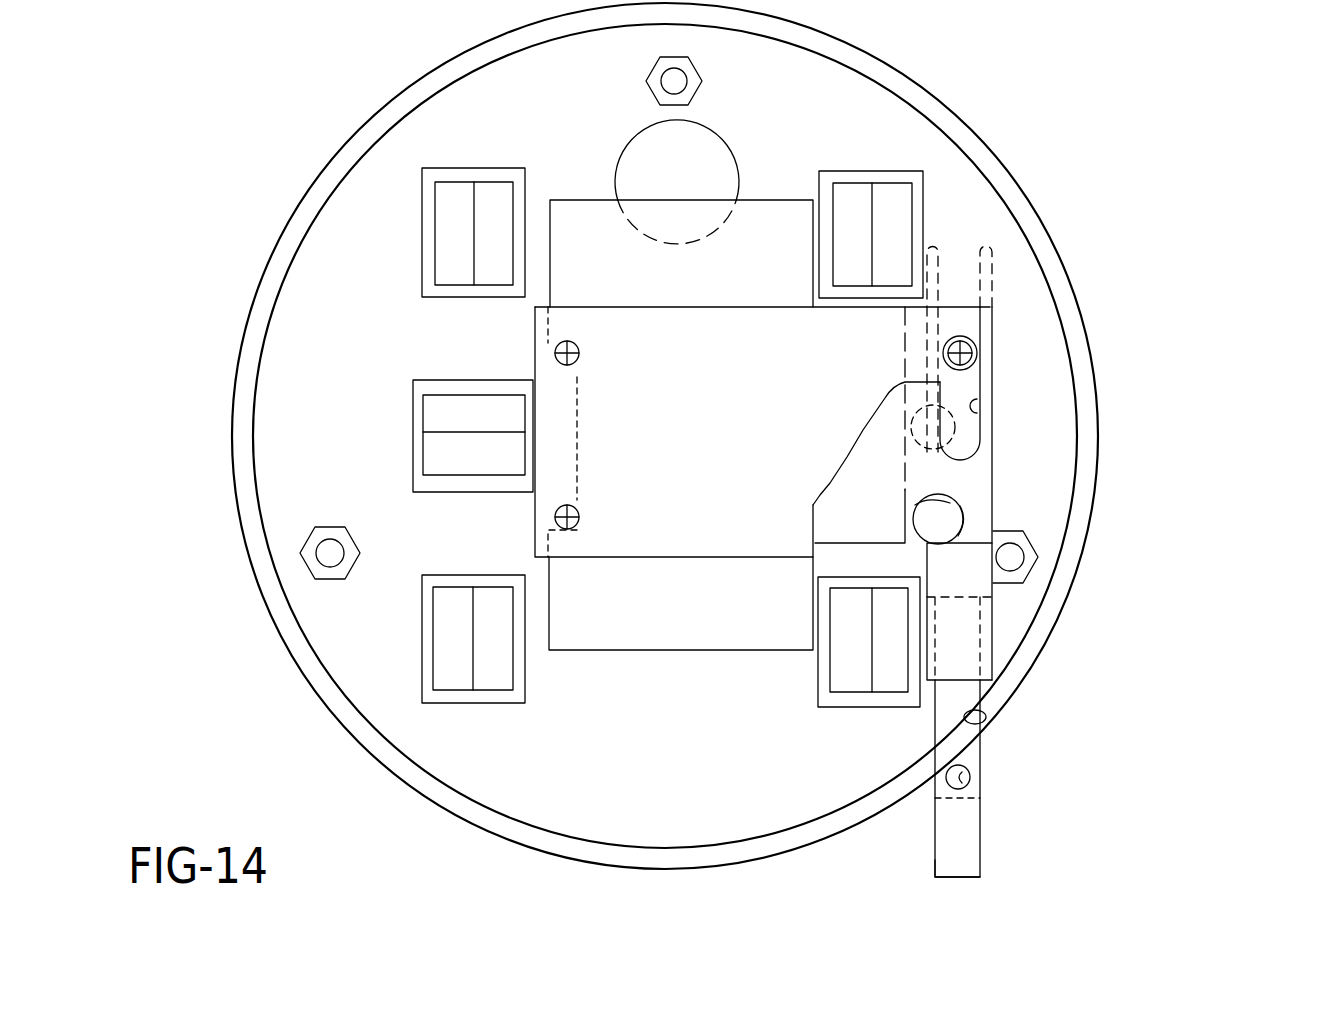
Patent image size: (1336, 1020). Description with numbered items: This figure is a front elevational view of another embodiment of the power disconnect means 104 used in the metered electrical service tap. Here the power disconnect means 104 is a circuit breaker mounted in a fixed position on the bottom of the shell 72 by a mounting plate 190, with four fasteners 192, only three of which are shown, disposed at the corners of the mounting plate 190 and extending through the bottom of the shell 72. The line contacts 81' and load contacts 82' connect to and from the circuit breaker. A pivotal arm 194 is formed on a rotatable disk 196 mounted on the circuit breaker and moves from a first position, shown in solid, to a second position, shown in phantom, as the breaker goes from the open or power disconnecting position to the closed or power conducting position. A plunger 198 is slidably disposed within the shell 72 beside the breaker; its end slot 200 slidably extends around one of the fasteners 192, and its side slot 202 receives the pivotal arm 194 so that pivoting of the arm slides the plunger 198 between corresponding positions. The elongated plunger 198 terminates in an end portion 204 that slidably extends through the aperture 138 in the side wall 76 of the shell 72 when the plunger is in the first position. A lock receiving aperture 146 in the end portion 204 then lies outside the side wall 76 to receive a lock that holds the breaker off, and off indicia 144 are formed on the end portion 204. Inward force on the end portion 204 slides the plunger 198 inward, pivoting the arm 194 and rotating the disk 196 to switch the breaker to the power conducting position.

The shell 72 is at (1108, 336).
The side wall 76 is at (1095, 487).
The line contacts 81' is at (670, 210).
The load contacts 82' is at (594, 675).
The power disconnect means 104 is at (567, 219).
The aperture 138 is at (982, 722).
The off indicia 144 is at (975, 850).
The lock receiving aperture 146 is at (972, 783).
The mounting plate 190 is at (548, 376).
The fasteners 192 is at (556, 352).
The pivotal arm 194 is at (938, 525).
The rotatable disk 196 is at (984, 489).
The plunger 198 is at (925, 491).
The end slot 200 is at (977, 411).
The side slot 202 is at (955, 532).
The end portion 204 is at (942, 848).